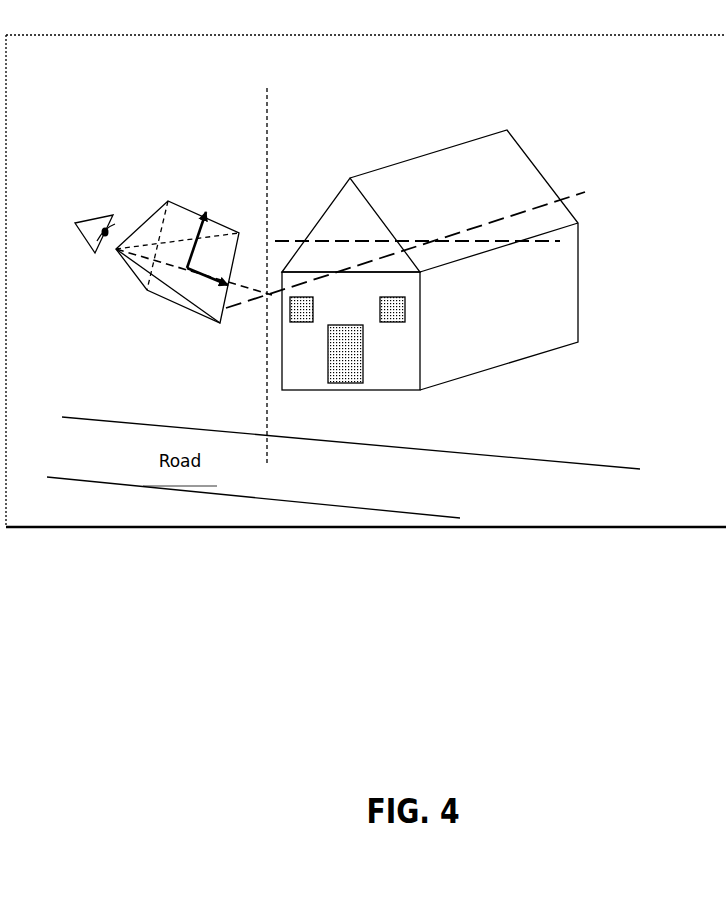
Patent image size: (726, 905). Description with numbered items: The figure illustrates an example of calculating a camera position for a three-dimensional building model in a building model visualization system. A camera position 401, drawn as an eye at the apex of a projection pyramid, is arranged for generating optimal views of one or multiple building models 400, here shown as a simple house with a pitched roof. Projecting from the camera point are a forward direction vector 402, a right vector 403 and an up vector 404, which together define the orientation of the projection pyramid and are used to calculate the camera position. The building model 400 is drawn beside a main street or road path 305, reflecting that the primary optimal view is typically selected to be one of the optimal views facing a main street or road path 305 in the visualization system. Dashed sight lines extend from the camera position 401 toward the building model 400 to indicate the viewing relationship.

The main street or road path 305 is at (353, 491).
The building model 400 is at (628, 214).
The camera position 401 is at (115, 262).
The forward direction vector 402 is at (162, 206).
The right vector 403 is at (196, 290).
The up vector 404 is at (201, 218).